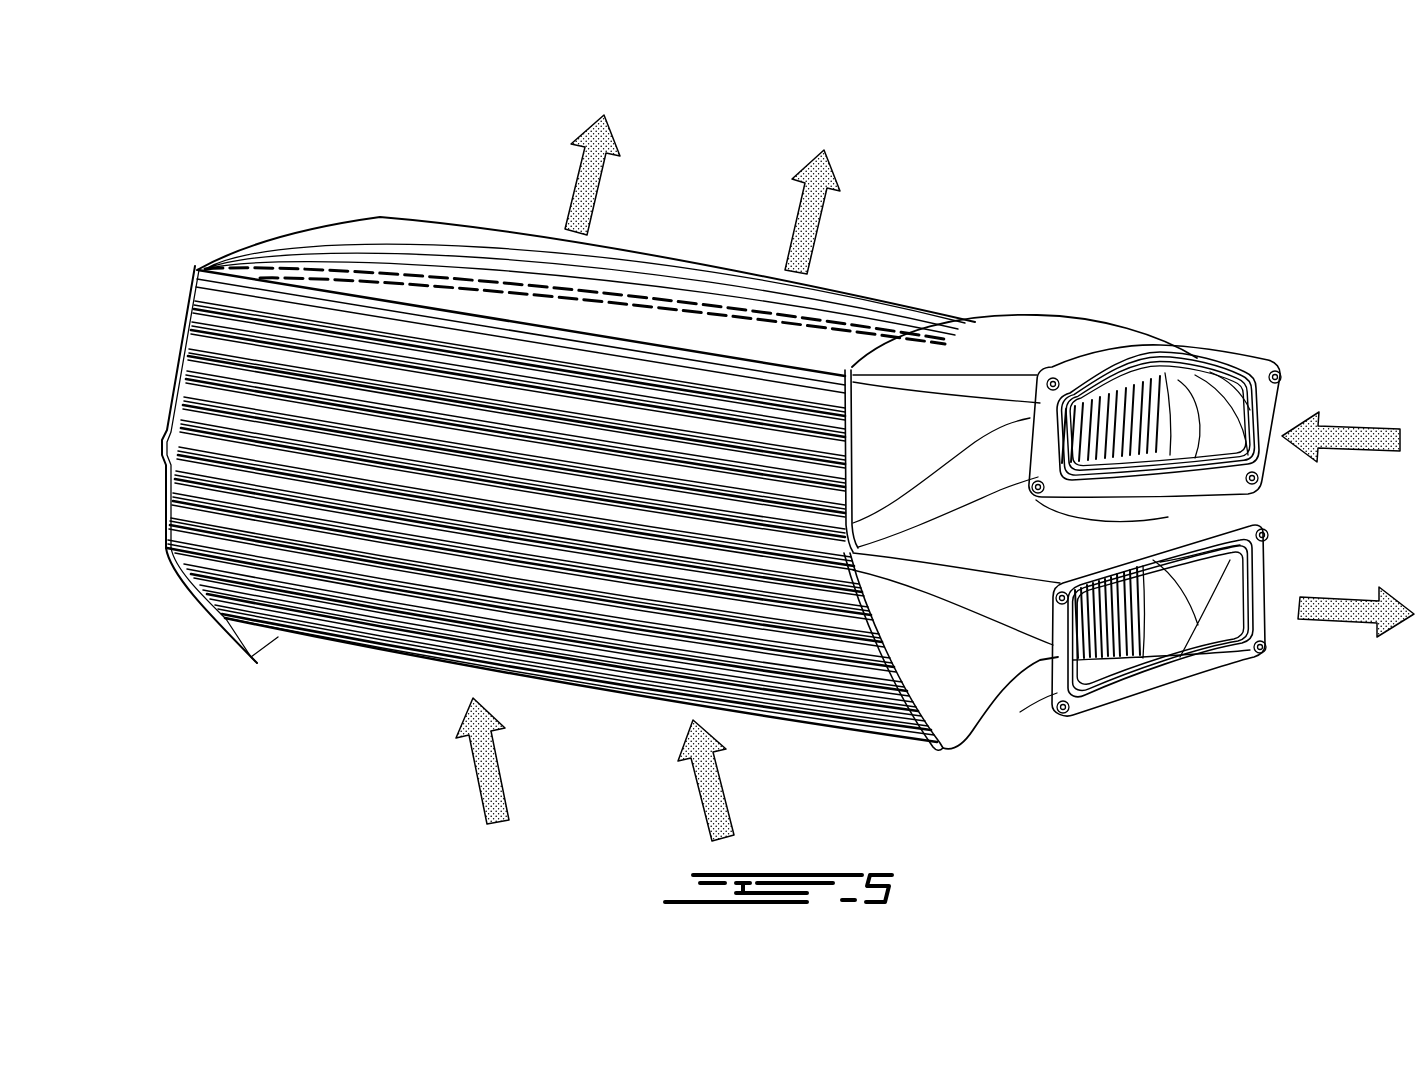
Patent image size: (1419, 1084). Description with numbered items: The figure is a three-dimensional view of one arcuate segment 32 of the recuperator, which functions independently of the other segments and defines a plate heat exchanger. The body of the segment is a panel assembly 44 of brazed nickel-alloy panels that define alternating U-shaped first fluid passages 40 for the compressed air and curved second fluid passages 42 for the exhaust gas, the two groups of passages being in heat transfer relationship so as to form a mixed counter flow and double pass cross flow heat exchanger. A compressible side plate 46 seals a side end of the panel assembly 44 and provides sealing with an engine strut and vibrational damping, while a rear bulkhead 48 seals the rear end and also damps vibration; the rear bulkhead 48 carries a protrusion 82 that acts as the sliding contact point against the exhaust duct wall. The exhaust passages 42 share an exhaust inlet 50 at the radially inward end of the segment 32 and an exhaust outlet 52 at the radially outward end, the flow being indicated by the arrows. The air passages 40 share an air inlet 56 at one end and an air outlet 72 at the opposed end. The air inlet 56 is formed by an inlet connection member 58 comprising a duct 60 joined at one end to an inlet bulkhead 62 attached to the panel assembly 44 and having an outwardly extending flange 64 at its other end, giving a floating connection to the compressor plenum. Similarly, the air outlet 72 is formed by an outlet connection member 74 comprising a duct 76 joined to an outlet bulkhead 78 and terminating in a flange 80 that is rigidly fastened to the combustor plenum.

The arcuate segment 32 is at (226, 214).
The first fluid passages 40 is at (1185, 362).
The second fluid passages 42 is at (681, 283).
The panel assembly 44 is at (890, 297).
The compressible side plate 46 is at (823, 697).
The rear bulkhead 48 is at (222, 618).
The exhaust inlet 50 is at (582, 686).
The exhaust outlet 52 is at (493, 253).
The air inlet 56 is at (1243, 405).
The inlet connection member 58 is at (1063, 320).
The duct 60 is at (1000, 340).
The inlet bulkhead 62 is at (1232, 393).
The flange 64 is at (1147, 348).
The air outlet 72 is at (1193, 615).
The outlet connection member 74 is at (962, 750).
The duct 76 is at (992, 712).
The outlet bulkhead 78 is at (1110, 692).
The flange 80 is at (1213, 682).
The protrusion 82 is at (165, 440).